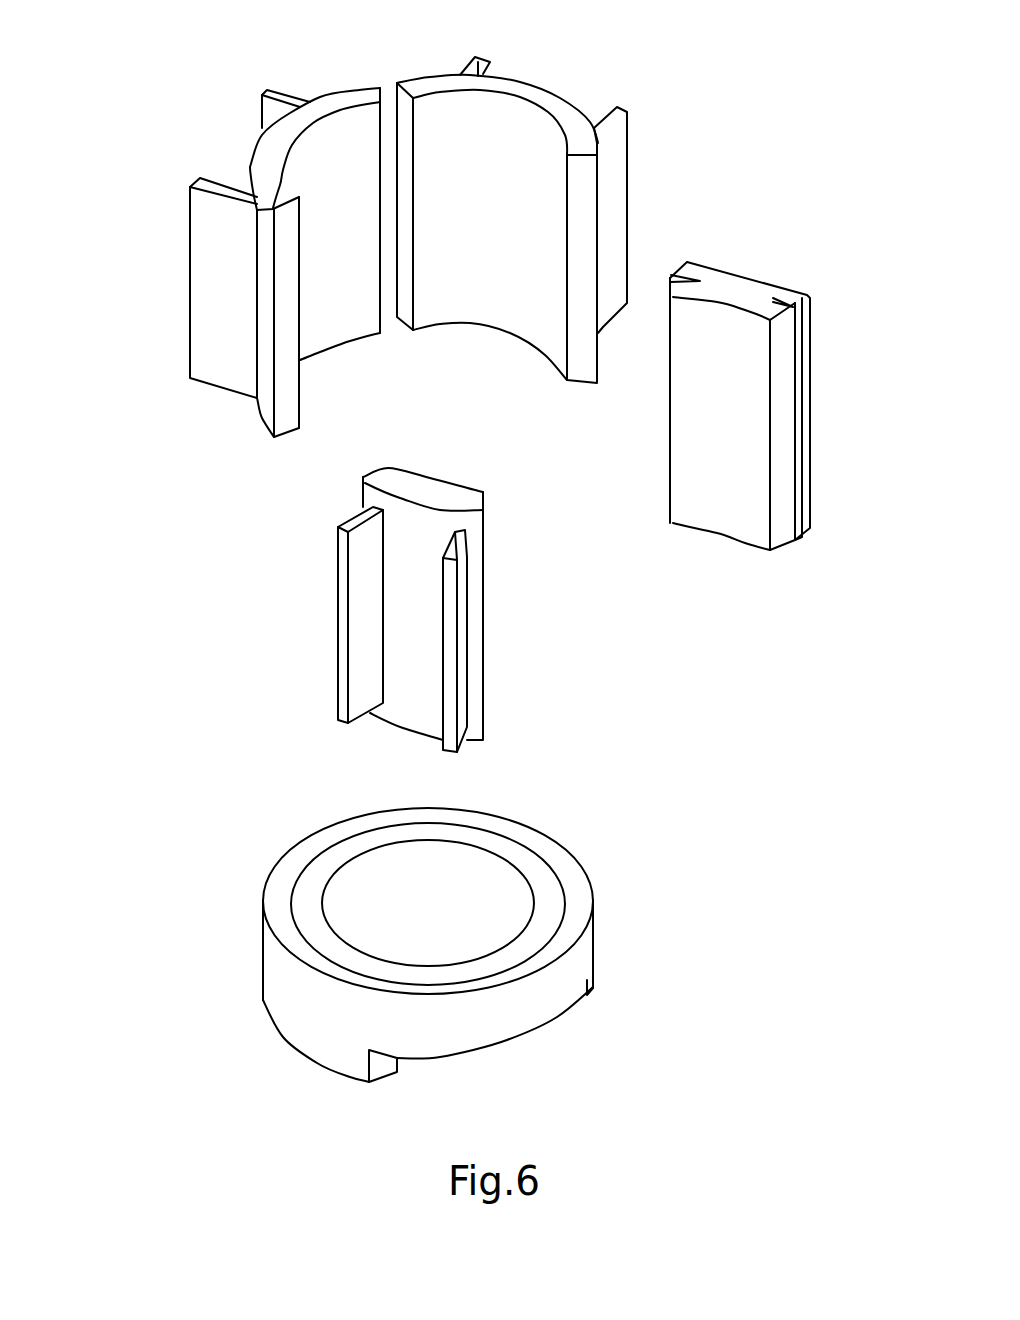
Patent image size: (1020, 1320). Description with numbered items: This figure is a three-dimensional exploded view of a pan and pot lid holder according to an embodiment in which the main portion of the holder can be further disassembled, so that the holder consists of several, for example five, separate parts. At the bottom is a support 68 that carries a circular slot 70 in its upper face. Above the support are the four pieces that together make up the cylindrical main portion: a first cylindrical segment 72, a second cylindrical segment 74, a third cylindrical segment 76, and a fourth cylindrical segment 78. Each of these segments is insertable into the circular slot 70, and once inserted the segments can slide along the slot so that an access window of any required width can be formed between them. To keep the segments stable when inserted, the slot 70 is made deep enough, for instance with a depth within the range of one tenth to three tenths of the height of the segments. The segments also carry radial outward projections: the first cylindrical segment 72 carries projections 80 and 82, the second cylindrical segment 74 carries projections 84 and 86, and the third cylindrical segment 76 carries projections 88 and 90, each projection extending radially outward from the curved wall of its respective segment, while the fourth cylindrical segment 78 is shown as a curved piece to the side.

The support 68 is at (603, 923).
The circular slot 70 is at (448, 835).
The first cylindrical segment 72 is at (353, 287).
The second cylindrical segment 74 is at (523, 227).
The third cylindrical segment 76 is at (422, 470).
The fourth cylindrical segment 78 is at (747, 263).
The radial outward projection 80 is at (217, 343).
The radial outward projection 82 is at (272, 108).
The radial outward projection 84 is at (490, 62).
The radial outward projection 86 is at (615, 168).
The radial outward projection 88 is at (365, 652).
The radial outward projection 90 is at (448, 673).